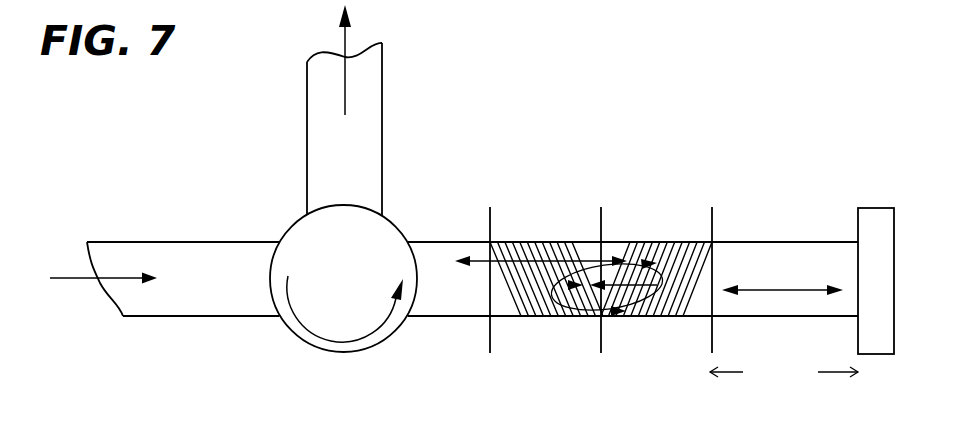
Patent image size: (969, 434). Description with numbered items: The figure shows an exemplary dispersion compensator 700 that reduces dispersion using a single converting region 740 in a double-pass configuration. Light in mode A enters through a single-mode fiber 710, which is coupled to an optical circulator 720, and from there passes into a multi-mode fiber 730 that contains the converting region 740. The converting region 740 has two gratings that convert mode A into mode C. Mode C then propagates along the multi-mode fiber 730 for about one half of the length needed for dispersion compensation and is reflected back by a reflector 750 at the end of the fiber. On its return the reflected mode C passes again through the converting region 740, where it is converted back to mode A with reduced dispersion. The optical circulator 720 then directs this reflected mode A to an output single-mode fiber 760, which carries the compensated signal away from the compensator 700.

The dispersion compensator 700 is at (547, 72).
The single-mode fiber 710 is at (235, 288).
The optical circulator 720 is at (365, 290).
The multi-mode fiber 730 is at (433, 317).
The converting region 740 is at (606, 170).
The reflector 750 is at (877, 208).
The output single-mode fiber 760 is at (365, 163).